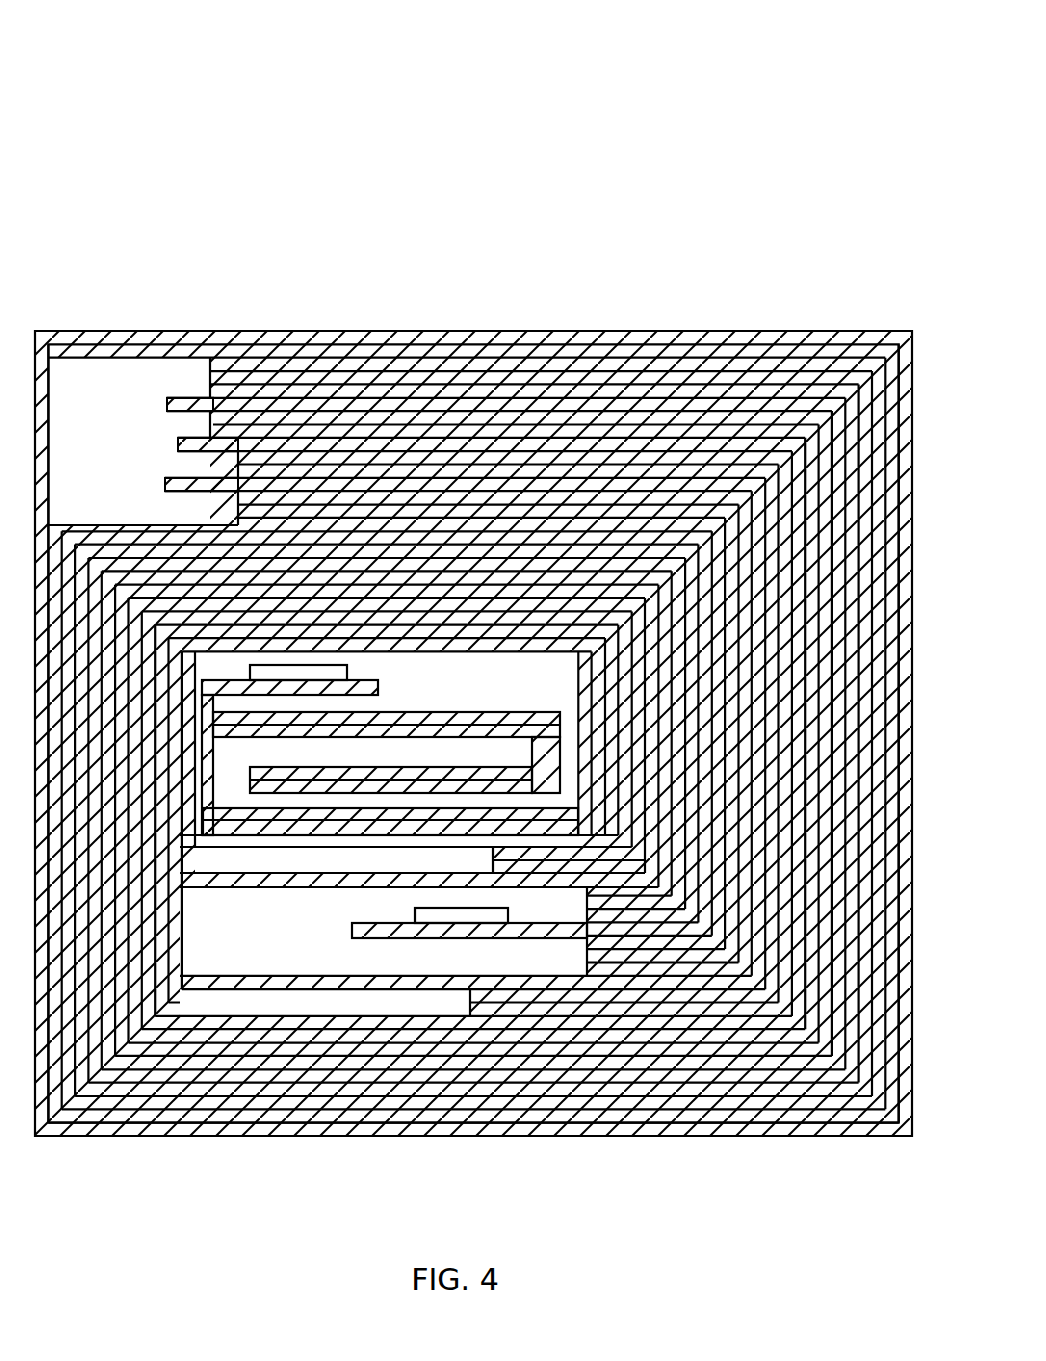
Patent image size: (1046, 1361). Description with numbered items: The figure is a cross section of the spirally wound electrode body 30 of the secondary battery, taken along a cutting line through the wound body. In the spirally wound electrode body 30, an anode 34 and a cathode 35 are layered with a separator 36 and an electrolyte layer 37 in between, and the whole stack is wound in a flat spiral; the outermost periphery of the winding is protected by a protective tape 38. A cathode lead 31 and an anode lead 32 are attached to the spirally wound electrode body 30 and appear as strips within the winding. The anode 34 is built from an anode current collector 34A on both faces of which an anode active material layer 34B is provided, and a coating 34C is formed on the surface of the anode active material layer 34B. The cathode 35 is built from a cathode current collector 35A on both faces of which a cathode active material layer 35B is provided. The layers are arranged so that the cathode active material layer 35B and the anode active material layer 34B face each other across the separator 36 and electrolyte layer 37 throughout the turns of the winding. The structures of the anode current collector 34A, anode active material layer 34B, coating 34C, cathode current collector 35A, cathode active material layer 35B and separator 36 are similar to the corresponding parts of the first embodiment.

The spirally wound electrode body 30 is at (786, 125).
The cathode lead 31 is at (455, 917).
The anode lead 32 is at (270, 675).
The anode 34 is at (370, 188).
The anode current collector 34A is at (125, 347).
The anode active material layer 34B is at (262, 520).
The coating 34C is at (350, 507).
The cathode 35 is at (610, 190).
The cathode current collector 35A is at (437, 440).
The cathode active material layer 35B is at (565, 460).
The separator 36 is at (640, 470).
The electrolyte layer 37 is at (720, 470).
The protective tape 38 is at (850, 333).